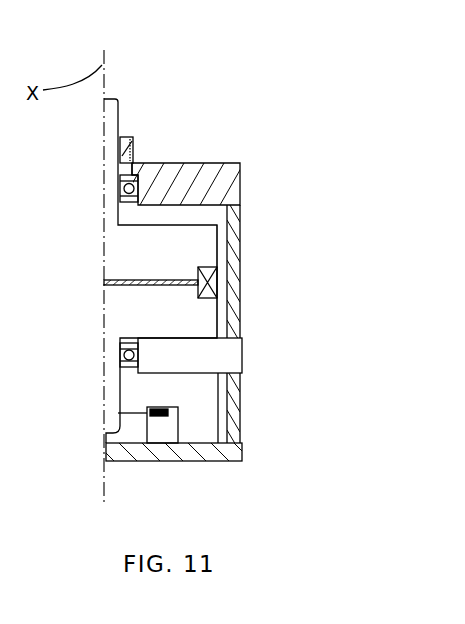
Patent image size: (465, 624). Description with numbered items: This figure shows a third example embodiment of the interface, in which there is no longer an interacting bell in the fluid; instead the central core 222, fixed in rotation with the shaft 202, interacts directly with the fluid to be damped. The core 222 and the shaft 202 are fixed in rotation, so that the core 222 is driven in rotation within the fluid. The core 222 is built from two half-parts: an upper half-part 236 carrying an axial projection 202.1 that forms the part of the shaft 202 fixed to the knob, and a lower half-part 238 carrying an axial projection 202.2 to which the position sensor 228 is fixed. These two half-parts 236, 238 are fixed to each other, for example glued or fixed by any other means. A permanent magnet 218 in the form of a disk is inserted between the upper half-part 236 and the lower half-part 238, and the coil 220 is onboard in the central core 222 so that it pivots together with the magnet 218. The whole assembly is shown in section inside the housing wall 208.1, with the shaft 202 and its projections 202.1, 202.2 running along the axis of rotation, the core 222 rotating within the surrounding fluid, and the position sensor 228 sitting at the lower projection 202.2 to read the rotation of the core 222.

The shaft 202 is at (120, 125).
The axial projection 202.1 is at (113, 175).
The axial projection 202.2 is at (112, 425).
The housing wall 208.1 is at (240, 315).
The permanent magnet 218 is at (135, 285).
The coil 220 is at (215, 287).
The core 222 is at (180, 222).
The position sensor 228 is at (185, 428).
The upper half-part 236 is at (207, 260).
The lower half-part 238 is at (205, 320).